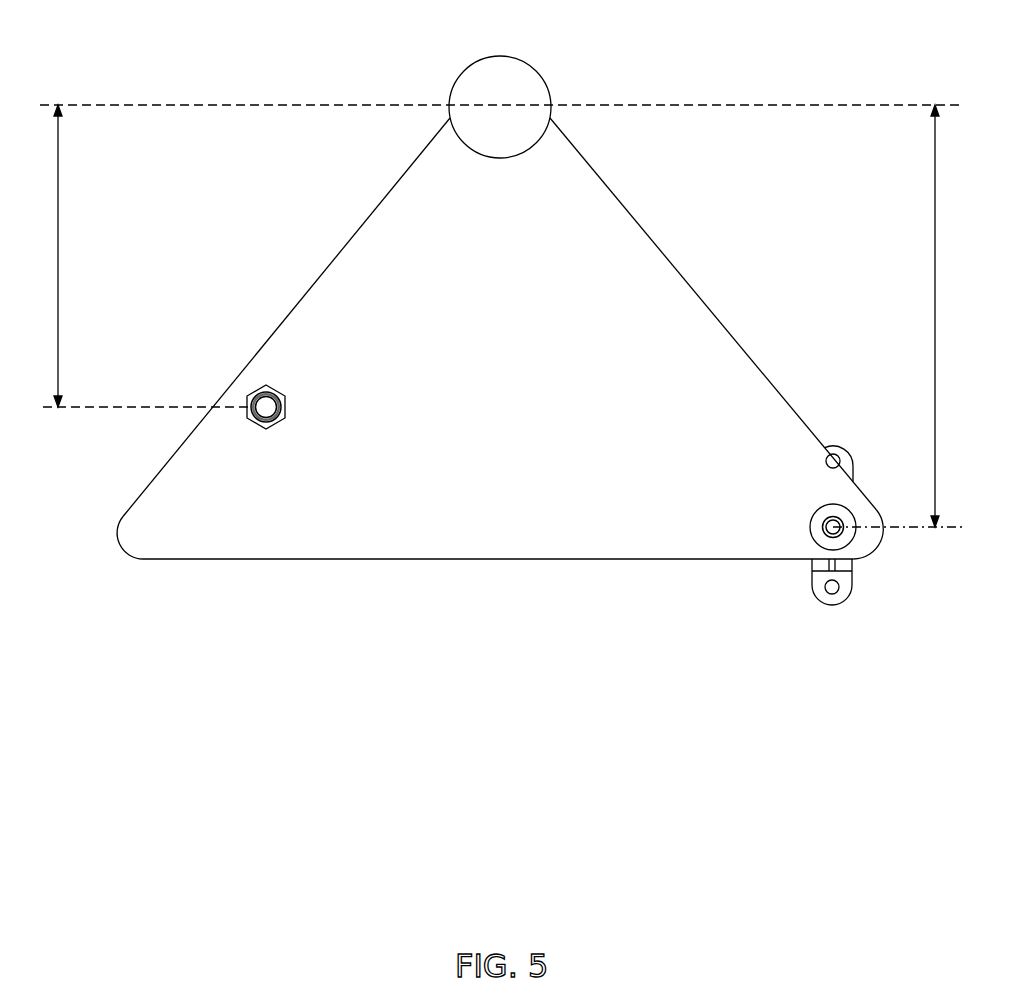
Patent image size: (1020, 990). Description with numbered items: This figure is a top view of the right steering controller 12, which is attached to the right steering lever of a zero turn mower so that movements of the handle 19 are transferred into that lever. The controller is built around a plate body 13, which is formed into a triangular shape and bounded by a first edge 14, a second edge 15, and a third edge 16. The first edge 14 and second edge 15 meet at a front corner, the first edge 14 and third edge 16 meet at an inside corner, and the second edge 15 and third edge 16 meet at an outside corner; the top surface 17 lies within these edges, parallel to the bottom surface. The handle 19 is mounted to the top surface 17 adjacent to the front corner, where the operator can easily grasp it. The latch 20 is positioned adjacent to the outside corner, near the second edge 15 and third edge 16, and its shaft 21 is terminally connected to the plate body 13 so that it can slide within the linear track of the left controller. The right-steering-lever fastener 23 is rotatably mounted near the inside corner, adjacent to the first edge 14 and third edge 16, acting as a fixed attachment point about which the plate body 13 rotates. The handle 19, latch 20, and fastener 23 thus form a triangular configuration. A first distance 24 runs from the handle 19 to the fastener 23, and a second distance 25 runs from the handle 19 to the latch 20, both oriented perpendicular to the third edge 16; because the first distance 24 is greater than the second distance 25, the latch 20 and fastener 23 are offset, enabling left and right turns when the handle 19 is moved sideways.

The right steering controller 12 is at (500, 368).
The plate body 13 is at (388, 212).
The first edge 14 is at (750, 358).
The second edge 15 is at (268, 338).
The third edge 16 is at (482, 560).
The top surface 17 is at (523, 383).
The handle 19 is at (500, 63).
The latch 20 is at (324, 395).
The shaft 21 is at (288, 403).
The right-steering-lever fastener 23 is at (858, 583).
The first distance 24 is at (935, 262).
The second distance 25 is at (58, 247).